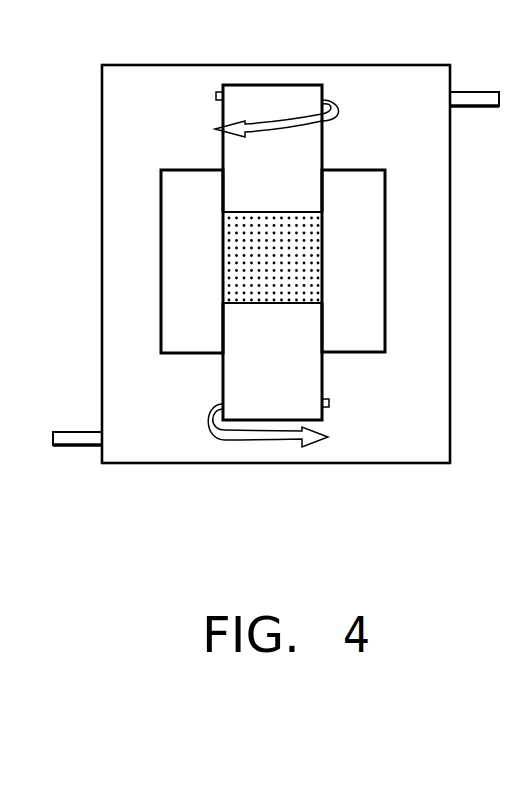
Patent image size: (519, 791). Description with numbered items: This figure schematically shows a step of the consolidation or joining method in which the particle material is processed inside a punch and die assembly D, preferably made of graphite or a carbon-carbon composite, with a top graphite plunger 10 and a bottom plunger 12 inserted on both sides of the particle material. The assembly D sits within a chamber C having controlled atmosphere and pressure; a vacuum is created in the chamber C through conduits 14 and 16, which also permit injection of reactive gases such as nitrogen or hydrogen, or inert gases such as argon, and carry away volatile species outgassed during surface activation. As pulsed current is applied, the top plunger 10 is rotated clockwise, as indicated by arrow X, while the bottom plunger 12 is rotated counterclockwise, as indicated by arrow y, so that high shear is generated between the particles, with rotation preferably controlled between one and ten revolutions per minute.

The chamber C is at (125, 65).
The punch and die assembly D is at (118, 222).
The top graphite plunger 10 is at (322, 150).
The bottom plunger 12 is at (323, 380).
The conduit 14 is at (480, 91).
The conduit 16 is at (73, 431).
The arrow X is at (334, 100).
The arrow y is at (240, 436).